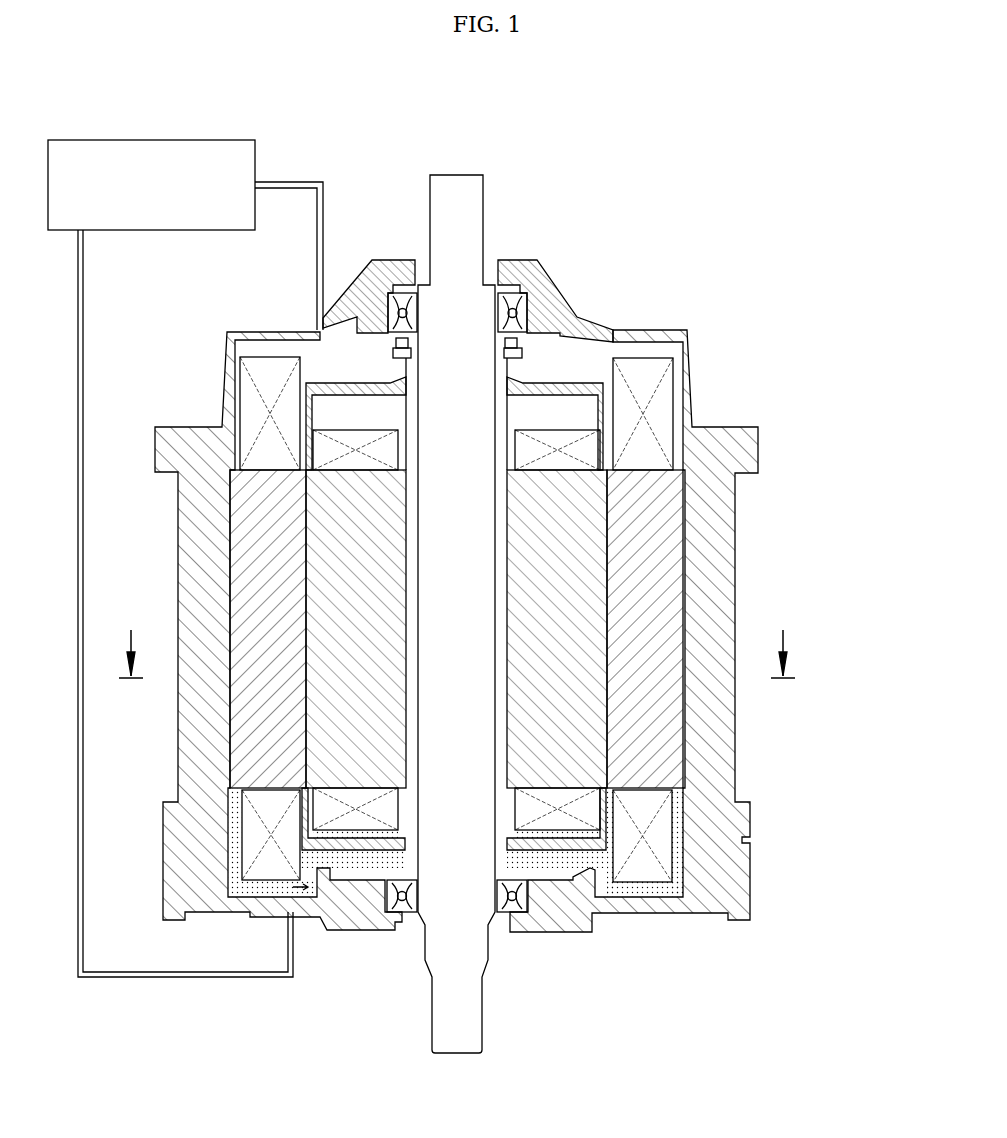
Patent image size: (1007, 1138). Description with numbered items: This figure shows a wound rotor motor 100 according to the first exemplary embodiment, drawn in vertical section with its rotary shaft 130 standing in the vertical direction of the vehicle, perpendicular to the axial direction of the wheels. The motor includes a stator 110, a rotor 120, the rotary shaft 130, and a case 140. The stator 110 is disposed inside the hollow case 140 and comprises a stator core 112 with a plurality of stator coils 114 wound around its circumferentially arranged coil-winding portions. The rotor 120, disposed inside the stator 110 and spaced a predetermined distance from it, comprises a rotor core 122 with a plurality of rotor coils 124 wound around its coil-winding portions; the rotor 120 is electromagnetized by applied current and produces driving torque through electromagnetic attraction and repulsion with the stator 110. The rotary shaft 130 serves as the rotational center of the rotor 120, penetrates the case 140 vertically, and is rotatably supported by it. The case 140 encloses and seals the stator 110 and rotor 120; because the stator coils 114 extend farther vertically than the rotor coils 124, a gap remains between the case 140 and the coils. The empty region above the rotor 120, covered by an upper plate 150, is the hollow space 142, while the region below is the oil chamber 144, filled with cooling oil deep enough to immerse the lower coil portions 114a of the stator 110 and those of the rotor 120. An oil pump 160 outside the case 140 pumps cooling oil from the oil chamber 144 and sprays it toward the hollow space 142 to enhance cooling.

The wound rotor motor 100 is at (523, 570).
The stator 110 is at (579, 682).
The stator core 112 is at (673, 488).
The stator coils 114 is at (673, 417).
The lower coil portions 114a is at (660, 842).
The rotor 120 is at (608, 592).
The rotor core 122 is at (593, 735).
The rotor coils 124 is at (578, 424).
The rotary shaft 130 is at (460, 185).
The case 140 is at (707, 552).
The hollow space 142 is at (342, 412).
The oil chamber 144 is at (298, 910).
The upper plate 150 is at (437, 541).
The oil pump 160 is at (210, 140).